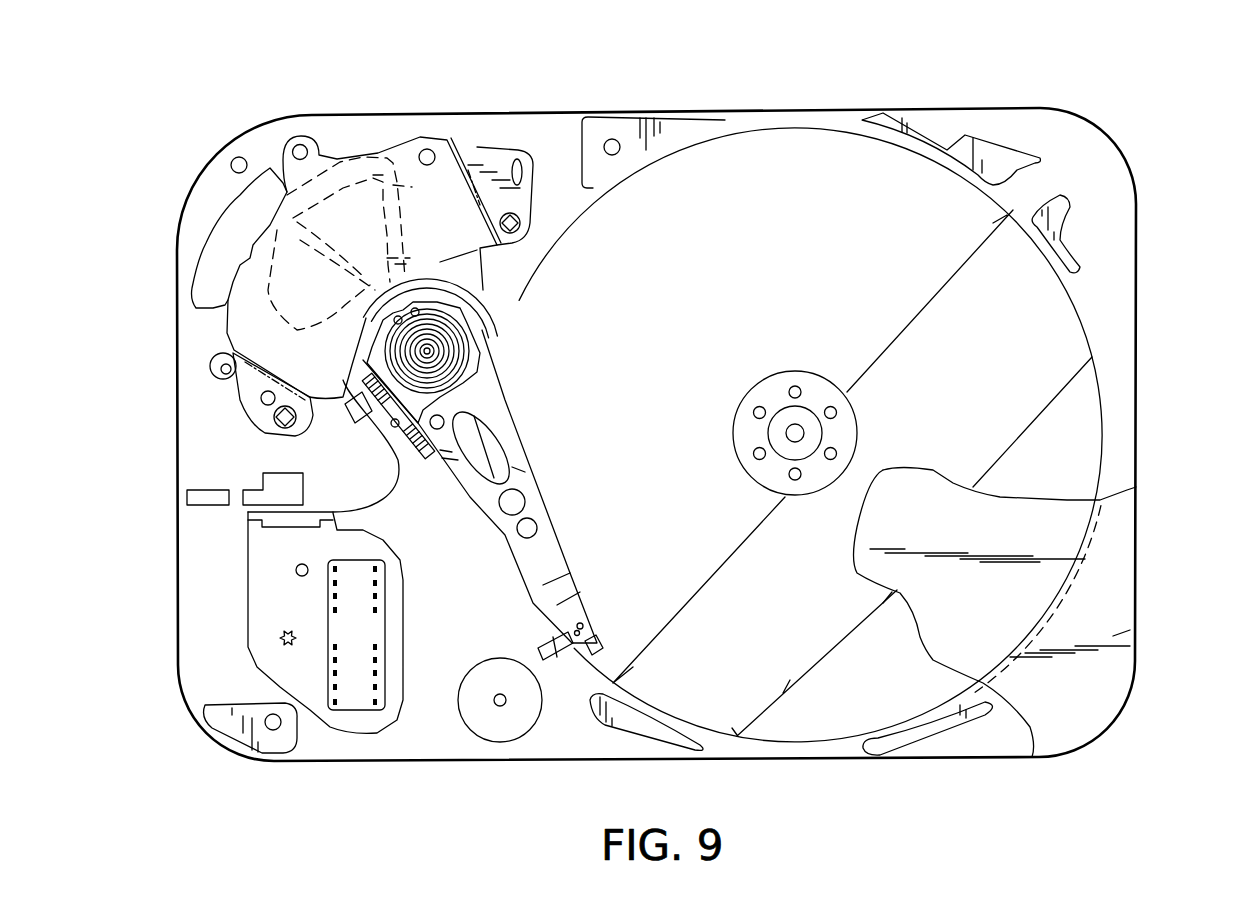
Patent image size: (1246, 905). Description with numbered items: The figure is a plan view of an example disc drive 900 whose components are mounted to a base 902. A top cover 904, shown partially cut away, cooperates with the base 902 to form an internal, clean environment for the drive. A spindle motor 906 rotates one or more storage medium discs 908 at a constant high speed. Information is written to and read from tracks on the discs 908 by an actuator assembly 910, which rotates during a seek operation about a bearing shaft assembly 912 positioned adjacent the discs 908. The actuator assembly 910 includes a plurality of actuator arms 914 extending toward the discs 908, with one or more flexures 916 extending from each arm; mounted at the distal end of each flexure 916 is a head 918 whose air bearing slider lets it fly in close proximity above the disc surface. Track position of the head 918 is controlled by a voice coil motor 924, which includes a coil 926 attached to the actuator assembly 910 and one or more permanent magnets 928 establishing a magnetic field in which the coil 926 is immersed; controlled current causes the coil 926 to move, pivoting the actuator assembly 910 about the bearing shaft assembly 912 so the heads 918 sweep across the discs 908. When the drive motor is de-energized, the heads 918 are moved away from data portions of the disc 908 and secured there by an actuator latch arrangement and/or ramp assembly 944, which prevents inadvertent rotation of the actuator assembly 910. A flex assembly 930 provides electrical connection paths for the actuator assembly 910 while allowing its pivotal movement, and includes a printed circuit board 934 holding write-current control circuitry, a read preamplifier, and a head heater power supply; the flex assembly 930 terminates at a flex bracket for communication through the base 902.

The disc drive 900 is at (152, 106).
The base 902 is at (550, 136).
The top cover 904 is at (1100, 637).
The spindle motor 906 is at (797, 432).
The storage medium disc 908 is at (770, 183).
The actuator assembly 910 is at (521, 444).
The bearing shaft assembly 912 is at (428, 351).
The actuator arm 914 is at (538, 493).
The flexure 916 is at (569, 605).
The head 918 is at (597, 643).
The voice coil motor 924 is at (395, 147).
The coil 926 is at (312, 133).
The permanent magnet 928 is at (465, 140).
The flex assembly 930 is at (400, 500).
The printed circuit board 934 is at (266, 590).
The ramp assembly 944 is at (553, 660).